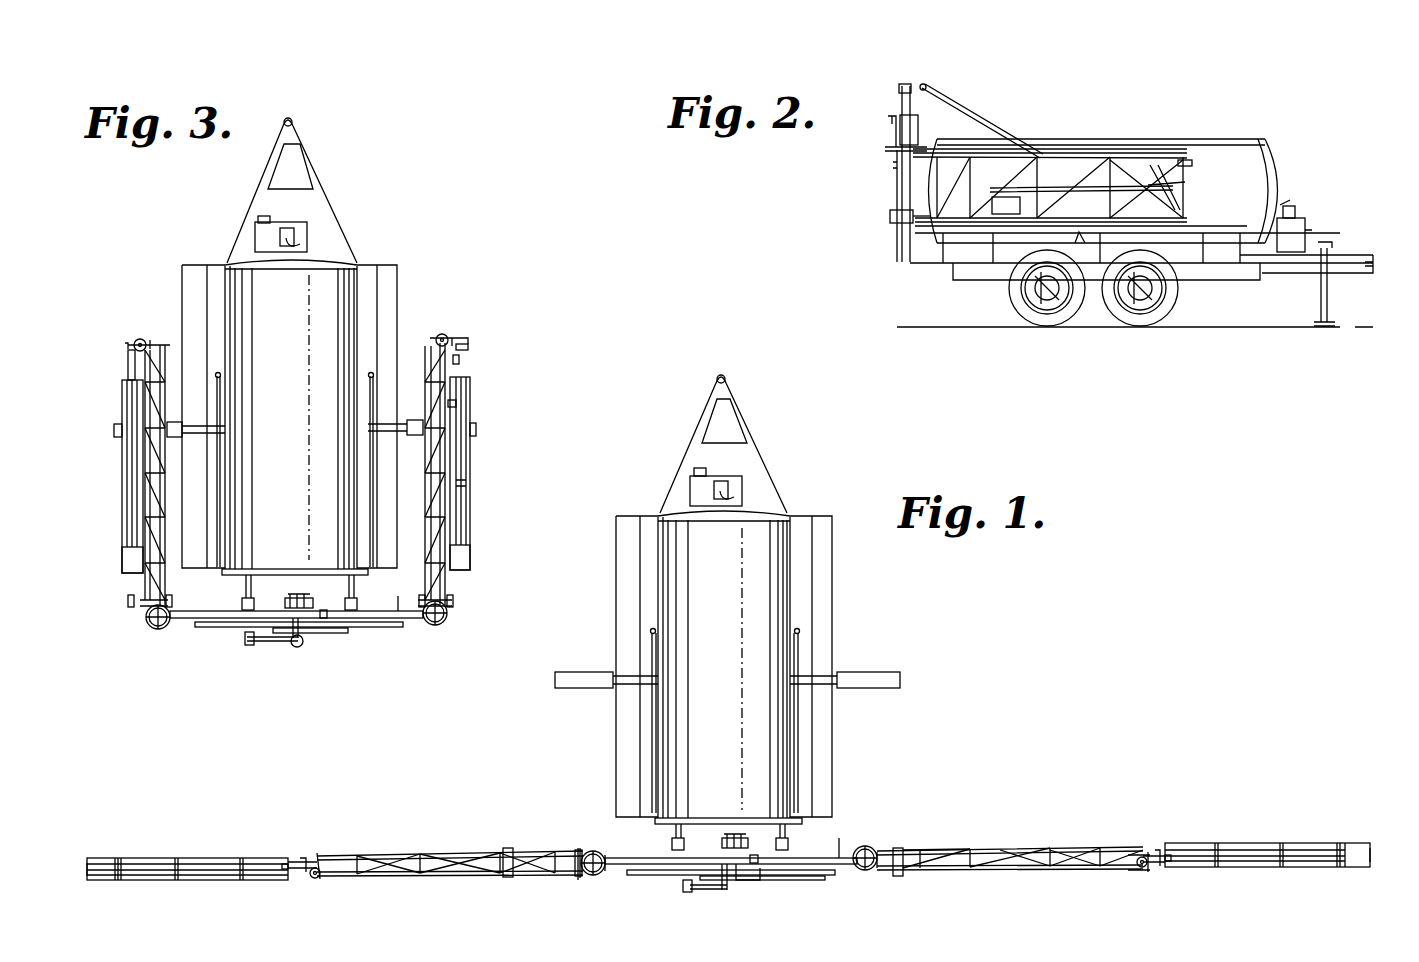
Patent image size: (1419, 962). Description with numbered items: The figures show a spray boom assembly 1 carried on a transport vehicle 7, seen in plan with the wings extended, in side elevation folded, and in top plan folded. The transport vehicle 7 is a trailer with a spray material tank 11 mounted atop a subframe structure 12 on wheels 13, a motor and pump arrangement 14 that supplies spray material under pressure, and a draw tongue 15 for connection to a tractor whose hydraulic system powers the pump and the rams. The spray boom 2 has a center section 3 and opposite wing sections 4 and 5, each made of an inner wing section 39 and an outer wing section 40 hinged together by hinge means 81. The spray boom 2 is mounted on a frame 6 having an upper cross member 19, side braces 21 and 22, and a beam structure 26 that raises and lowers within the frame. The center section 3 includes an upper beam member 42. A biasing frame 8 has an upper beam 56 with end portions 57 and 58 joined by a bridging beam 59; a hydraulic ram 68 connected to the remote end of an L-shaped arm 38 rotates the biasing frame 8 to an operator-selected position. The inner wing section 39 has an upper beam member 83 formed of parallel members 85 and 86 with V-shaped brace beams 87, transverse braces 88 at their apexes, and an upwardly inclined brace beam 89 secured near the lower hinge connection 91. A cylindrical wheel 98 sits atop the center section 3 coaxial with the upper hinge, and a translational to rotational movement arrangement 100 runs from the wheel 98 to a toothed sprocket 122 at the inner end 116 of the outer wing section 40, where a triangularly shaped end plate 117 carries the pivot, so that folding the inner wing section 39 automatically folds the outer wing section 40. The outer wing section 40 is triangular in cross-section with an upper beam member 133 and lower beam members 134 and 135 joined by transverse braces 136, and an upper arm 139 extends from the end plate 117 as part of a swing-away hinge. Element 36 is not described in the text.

In FIG. 3, the spray boom assembly 1 is at (417, 635).
In FIG. 2, the spray boom assembly 1 is at (861, 139).
In FIG. 1, the spray boom assembly 1 is at (854, 875).
In FIG. 3, the spray boom 2 is at (186, 628).
In FIG. 2, the spray boom 2 is at (897, 184).
In FIG. 1, the spray boom 2 is at (620, 868).
In FIG. 3, the center section 3 is at (368, 628).
In FIG. 2, the center section 3 is at (900, 170).
In FIG. 1, the center section 3 is at (648, 878).
In FIG. 3, the wing section 4 is at (137, 596).
In FIG. 1, the wing section 4 is at (462, 852).
In FIG. 3, the wing section 5 is at (450, 597).
In FIG. 2, the wing section 5 is at (1048, 150).
In FIG. 1, the wing section 5 is at (988, 850).
In FIG. 3, the frame 6 is at (357, 600).
In FIG. 2, the frame 6 is at (921, 92).
In FIG. 1, the frame 6 is at (790, 850).
In FIG. 3, the transport vehicle 7 is at (270, 320).
In FIG. 2, the transport vehicle 7 is at (1234, 194).
In FIG. 1, the transport vehicle 7 is at (704, 564).
In FIG. 3, the biasing frame 8 is at (348, 636).
In FIG. 2, the biasing frame 8 is at (890, 214).
In FIG. 1, the biasing frame 8 is at (810, 880).
In FIG. 3, the spray material tank 11 is at (265, 467).
In FIG. 2, the spray material tank 11 is at (1193, 139).
In FIG. 1, the spray material tank 11 is at (703, 680).
In FIG. 3, the subframe structure 12 is at (343, 243).
In FIG. 2, the subframe structure 12 is at (1258, 276).
In FIG. 1, the subframe structure 12 is at (775, 475).
In FIG. 2, the wheels 13 is at (1115, 324).
In FIG. 3, the motor and pump arrangement 14 is at (284, 222).
In FIG. 2, the motor and pump arrangement 14 is at (1305, 219).
In FIG. 1, the motor and pump arrangement 14 is at (718, 476).
In FIG. 3, the draw tongue 15 is at (307, 143).
In FIG. 2, the draw tongue 15 is at (1350, 256).
In FIG. 1, the draw tongue 15 is at (735, 382).
In FIG. 3, the upper cross member 19 is at (232, 580).
In FIG. 1, the upper cross member 19 is at (665, 826).
In FIG. 1, the side brace 21 is at (650, 744).
In FIG. 2, the side brace 22 is at (965, 122).
In FIG. 1, the side brace 22 is at (802, 744).
In FIG. 3, the beam structure 26 is at (303, 598).
In FIG. 2, the beam structure 26 is at (920, 130).
In FIG. 1, the beam structure 26 is at (737, 838).
In FIG. 3, the hose 36 is at (465, 490).
In FIG. 1, the L-shaped arm 38 is at (704, 888).
In FIG. 3, the inner wing section 39 is at (165, 358).
In FIG. 2, the inner wing section 39 is at (1100, 152).
In FIG. 1, the inner wing section 39 is at (395, 858).
In FIG. 3, the outer wing section 40 is at (123, 404).
In FIG. 1, the outer wing section 40 is at (196, 858).
In FIG. 3, the upper beam member 42 is at (397, 591).
In FIG. 1, the upper beam member 42 is at (838, 836).
In FIG. 1, the upper beam 56 is at (686, 892).
In FIG. 3, the end portion 57 is at (228, 642).
In FIG. 3, the end portion 58 is at (378, 634).
In FIG. 3, the bridging beam 59 is at (310, 648).
In FIG. 1, the bridging beam 59 is at (750, 882).
In FIG. 3, the hydraulic ram 68 is at (255, 646).
In FIG. 1, the hydraulic ram 68 is at (698, 893).
In FIG. 1, the hinge means 81 is at (583, 878).
In FIG. 3, the upper beam member 83 is at (457, 412).
In FIG. 1, the upper beam member 83 is at (468, 875).
In FIG. 1, the parallel member 85 is at (898, 850).
In FIG. 1, the parallel member 86 is at (972, 868).
In FIG. 1, the brace beams 87 is at (428, 876).
In FIG. 1, the transverse braces 88 is at (455, 852).
In FIG. 1, the upwardly inclined brace beam 89 is at (509, 852).
In FIG. 2, the lower hinge connection 91 is at (897, 230).
In FIG. 3, the cylindrical wheel 98 is at (444, 620).
In FIG. 1, the cylindrical wheel 98 is at (862, 846).
In FIG. 3, the translational to rotational movement arrangement 100 is at (155, 631).
In FIG. 2, the translational to rotational movement arrangement 100 is at (888, 147).
In FIG. 1, the translational to rotational movement arrangement 100 is at (592, 850).
In FIG. 3, the inner end 116 is at (128, 364).
In FIG. 1, the inner end 116 is at (302, 860).
In FIG. 2, the triangularly shaped end plate 117 is at (1188, 202).
In FIG. 3, the toothed sprocket 122 is at (136, 343).
In FIG. 2, the toothed sprocket 122 is at (1193, 166).
In FIG. 1, the toothed sprocket 122 is at (316, 878).
In FIG. 3, the upper beam member 133 is at (122, 472).
In FIG. 2, the upper beam member 133 is at (998, 197).
In FIG. 1, the upper beam member 133 is at (240, 858).
In FIG. 1, the lower beam member 134 is at (198, 880).
In FIG. 3, the lower beam member 135 is at (116, 435).
In FIG. 1, the lower beam member 135 is at (134, 858).
In FIG. 2, the transverse braces 136 is at (1080, 224).
In FIG. 1, the transverse braces 136 is at (174, 858).
In FIG. 3, the upper arm 139 is at (462, 350).
In FIG. 1, the upper arm 139 is at (290, 872).